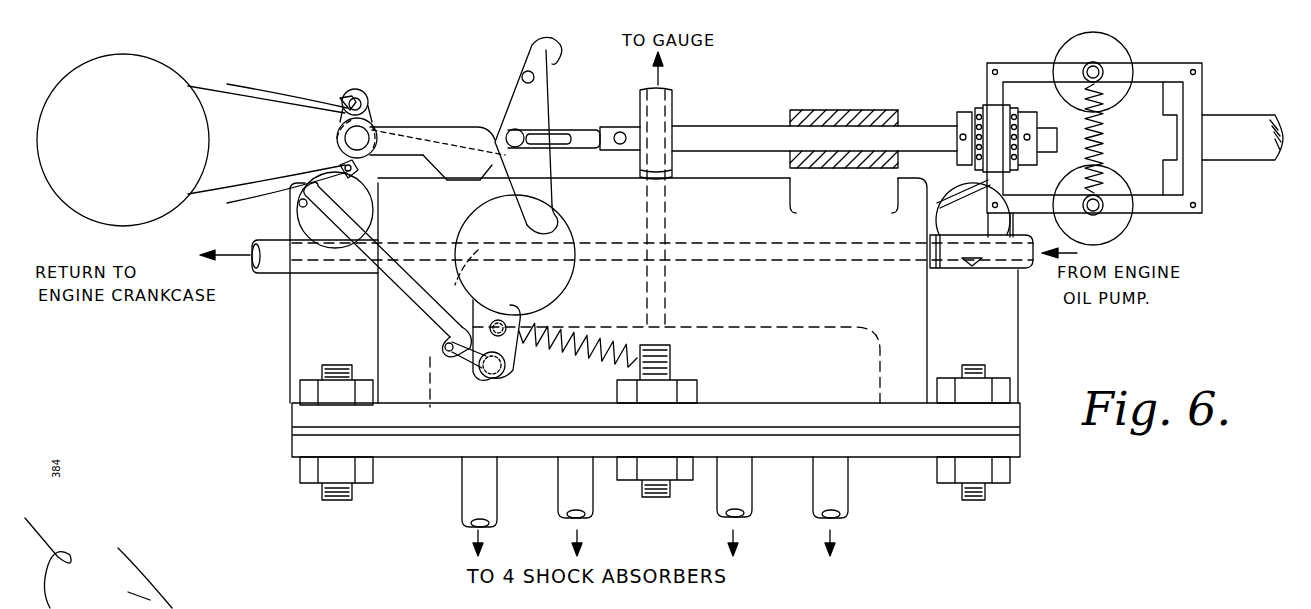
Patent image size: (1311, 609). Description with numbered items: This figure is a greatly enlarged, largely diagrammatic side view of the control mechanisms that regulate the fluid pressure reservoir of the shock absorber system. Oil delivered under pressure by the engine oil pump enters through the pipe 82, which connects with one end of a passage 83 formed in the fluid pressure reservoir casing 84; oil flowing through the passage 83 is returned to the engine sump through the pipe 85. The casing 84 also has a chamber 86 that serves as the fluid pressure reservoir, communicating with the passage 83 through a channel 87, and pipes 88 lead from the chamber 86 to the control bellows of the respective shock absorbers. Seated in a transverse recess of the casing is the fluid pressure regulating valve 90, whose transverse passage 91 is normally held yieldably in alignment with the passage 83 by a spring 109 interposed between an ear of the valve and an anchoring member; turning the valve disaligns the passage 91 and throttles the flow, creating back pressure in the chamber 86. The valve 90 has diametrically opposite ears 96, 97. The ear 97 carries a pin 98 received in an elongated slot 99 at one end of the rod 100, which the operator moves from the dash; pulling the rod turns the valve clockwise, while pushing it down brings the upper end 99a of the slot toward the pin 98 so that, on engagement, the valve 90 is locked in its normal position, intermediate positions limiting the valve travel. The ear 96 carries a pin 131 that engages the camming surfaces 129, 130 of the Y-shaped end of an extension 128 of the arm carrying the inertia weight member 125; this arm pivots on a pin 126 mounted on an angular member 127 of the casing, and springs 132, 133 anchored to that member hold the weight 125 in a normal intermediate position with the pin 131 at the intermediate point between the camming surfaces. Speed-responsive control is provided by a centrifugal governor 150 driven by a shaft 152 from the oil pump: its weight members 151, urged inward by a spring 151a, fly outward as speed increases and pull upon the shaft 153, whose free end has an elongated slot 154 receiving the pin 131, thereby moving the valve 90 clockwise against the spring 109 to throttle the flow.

The pipe 82 is at (1005, 270).
The passage 83 is at (800, 253).
The fluid pressure reservoir casing 84 is at (900, 337).
The pipe 85 is at (262, 262).
The chamber 86 is at (843, 383).
The channel 87 is at (665, 292).
The pipes 88 is at (870, 512).
The fluid pressure regulating valve 90 is at (548, 298).
The transverse passage 91 is at (465, 272).
The ear 96 is at (470, 193).
The ear 97 is at (472, 316).
The pin 98 is at (500, 372).
The elongated slot 99 is at (470, 358).
The upper end of slot 99a is at (445, 356).
The rod 100 is at (420, 322).
The spring 109 is at (553, 345).
The inertia weight member 125 is at (162, 192).
The pin 126 is at (362, 133).
The angular member 127 is at (360, 90).
The extension 128 is at (418, 135).
The camming surface 129 is at (512, 90).
The camming surface 130 is at (554, 225).
The pin 131 is at (518, 133).
The spring 132 is at (268, 98).
The spring 133 is at (250, 193).
The centrifugal governor 150 is at (1190, 100).
The weight members 151 is at (1140, 225).
The spring 151a is at (1103, 143).
The shaft 152 is at (1222, 147).
The shaft 153 is at (915, 112).
The elongated slot 154 is at (557, 132).